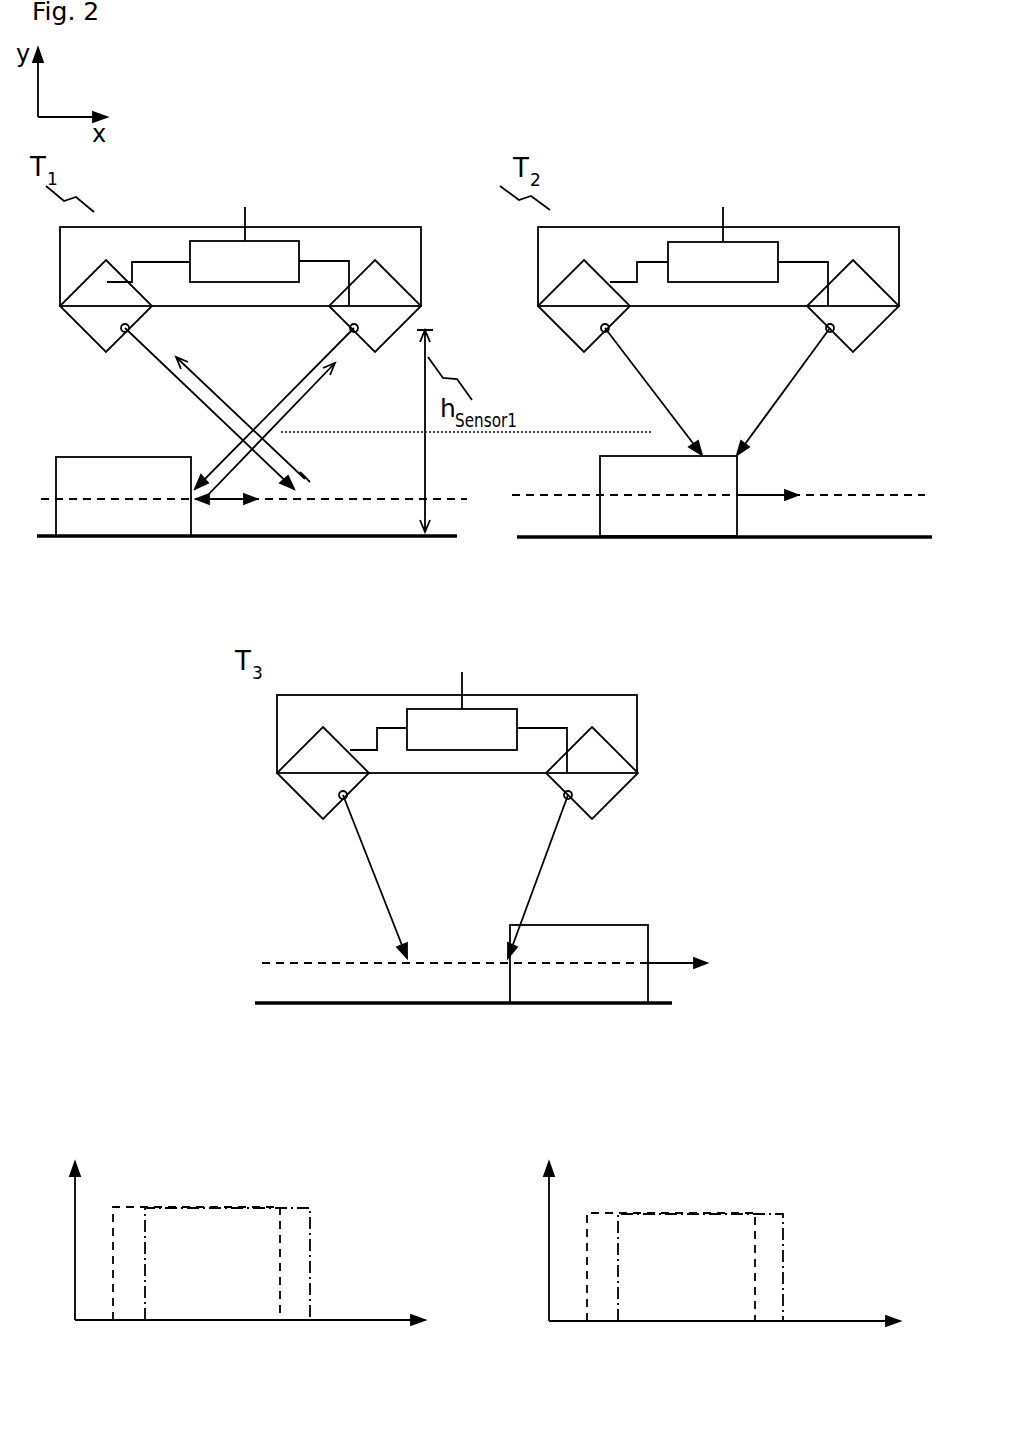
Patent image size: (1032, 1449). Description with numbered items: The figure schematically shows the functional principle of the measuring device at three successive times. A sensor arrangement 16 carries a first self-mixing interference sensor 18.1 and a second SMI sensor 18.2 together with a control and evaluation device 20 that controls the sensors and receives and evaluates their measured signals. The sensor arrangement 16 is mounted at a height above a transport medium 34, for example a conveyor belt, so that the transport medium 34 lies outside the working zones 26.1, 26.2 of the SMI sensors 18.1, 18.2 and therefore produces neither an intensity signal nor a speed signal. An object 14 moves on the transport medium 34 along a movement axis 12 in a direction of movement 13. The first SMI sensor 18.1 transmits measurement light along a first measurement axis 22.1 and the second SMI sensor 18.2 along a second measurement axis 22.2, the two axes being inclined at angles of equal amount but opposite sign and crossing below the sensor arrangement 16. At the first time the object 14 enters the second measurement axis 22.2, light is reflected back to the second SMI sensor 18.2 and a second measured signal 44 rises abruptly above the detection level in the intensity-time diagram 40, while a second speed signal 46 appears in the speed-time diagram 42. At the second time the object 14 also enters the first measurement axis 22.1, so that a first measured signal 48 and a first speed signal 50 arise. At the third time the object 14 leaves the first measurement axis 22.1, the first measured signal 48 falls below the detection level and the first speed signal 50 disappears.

The movement axis 12 is at (305, 496).
The direction of movement 13 is at (226, 505).
The object 14 is at (87, 462).
The first sensor arrangement 16 is at (346, 234).
The first self-mixing interference sensor 18.1 is at (75, 311).
The second self-mixing interference sensor 18.2 is at (395, 320).
The control and evaluation device 20 is at (253, 253).
The first measurement axis 22.1 is at (147, 352).
The second measurement axis 22.2 is at (305, 359).
The working zone 26.1 is at (277, 464).
The working zone 26.2 is at (274, 417).
The transport medium 34 is at (359, 537).
The intensity-time diagram 40 is at (93, 1152).
The speed-time diagram 42 is at (567, 1153).
The second measured signal 44 is at (118, 1207).
The second speed signal 46 is at (590, 1210).
The first measured signal 48 is at (300, 1207).
The first speed signal 50 is at (773, 1212).